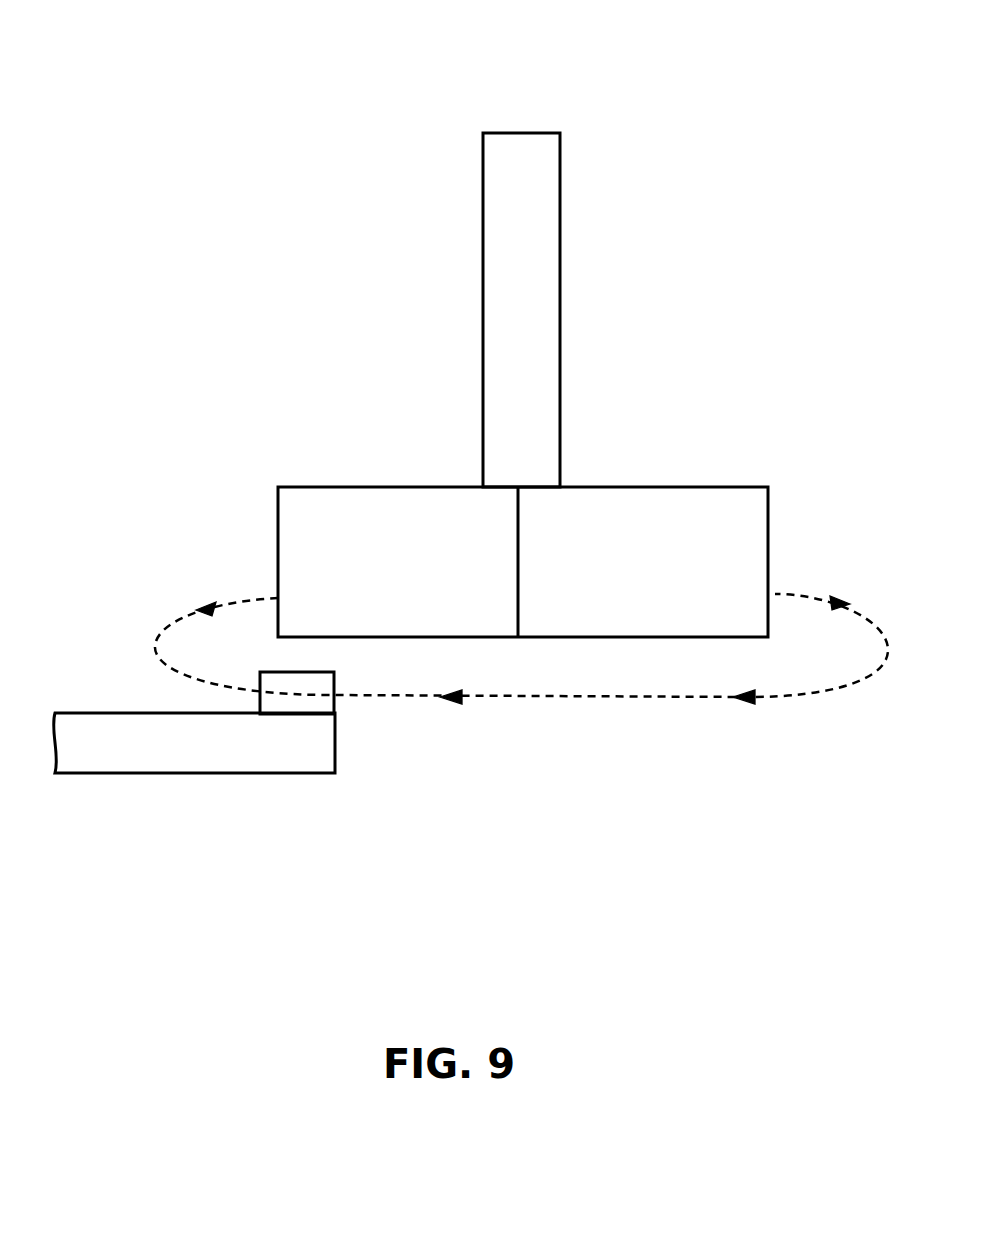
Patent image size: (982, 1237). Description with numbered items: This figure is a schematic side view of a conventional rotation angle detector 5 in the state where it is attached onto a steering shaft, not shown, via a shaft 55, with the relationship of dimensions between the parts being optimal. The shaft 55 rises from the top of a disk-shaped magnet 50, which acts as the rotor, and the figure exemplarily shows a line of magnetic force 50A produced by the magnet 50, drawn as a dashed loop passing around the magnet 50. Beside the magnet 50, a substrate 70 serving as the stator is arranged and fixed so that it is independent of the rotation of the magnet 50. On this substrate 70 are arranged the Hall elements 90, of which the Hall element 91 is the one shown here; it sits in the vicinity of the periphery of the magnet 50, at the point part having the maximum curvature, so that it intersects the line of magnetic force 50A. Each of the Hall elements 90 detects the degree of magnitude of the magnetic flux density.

The rotation angle detector 5 is at (722, 228).
The magnet 50 is at (670, 485).
The line of magnetic force 50A is at (655, 700).
The shaft 55 is at (560, 198).
The substrate 70 is at (235, 775).
The Hall elements 90 is at (335, 705).
The Hall element 91 is at (389, 742).